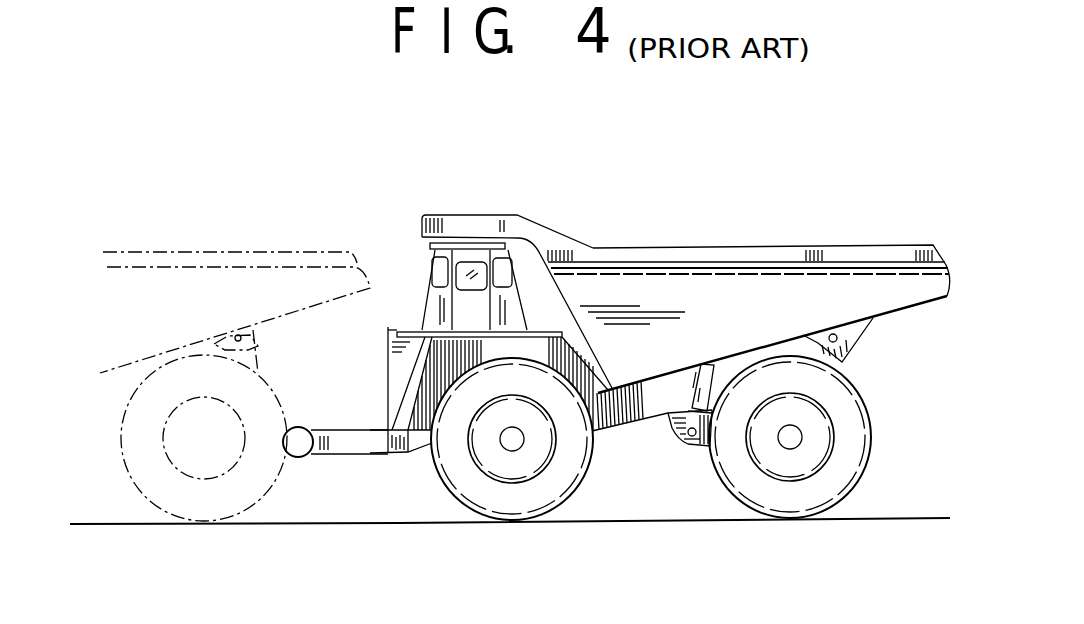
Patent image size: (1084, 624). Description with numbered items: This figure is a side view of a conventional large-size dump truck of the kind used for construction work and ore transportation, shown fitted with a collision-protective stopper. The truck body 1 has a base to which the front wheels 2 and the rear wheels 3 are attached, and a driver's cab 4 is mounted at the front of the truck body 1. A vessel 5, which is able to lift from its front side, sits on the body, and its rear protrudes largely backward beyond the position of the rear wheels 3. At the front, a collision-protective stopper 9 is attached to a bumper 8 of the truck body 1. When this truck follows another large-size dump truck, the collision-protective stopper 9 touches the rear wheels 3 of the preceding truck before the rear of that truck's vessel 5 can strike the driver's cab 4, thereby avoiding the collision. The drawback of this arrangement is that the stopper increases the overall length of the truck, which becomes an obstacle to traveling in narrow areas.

The truck body 1 is at (628, 408).
The front wheels 2 is at (550, 493).
The rear wheels 3 is at (272, 397).
The driver's cab 4 is at (418, 246).
The vessel 5 is at (657, 290).
The bumper 8 is at (400, 455).
The collision-protective stopper 9 is at (332, 440).